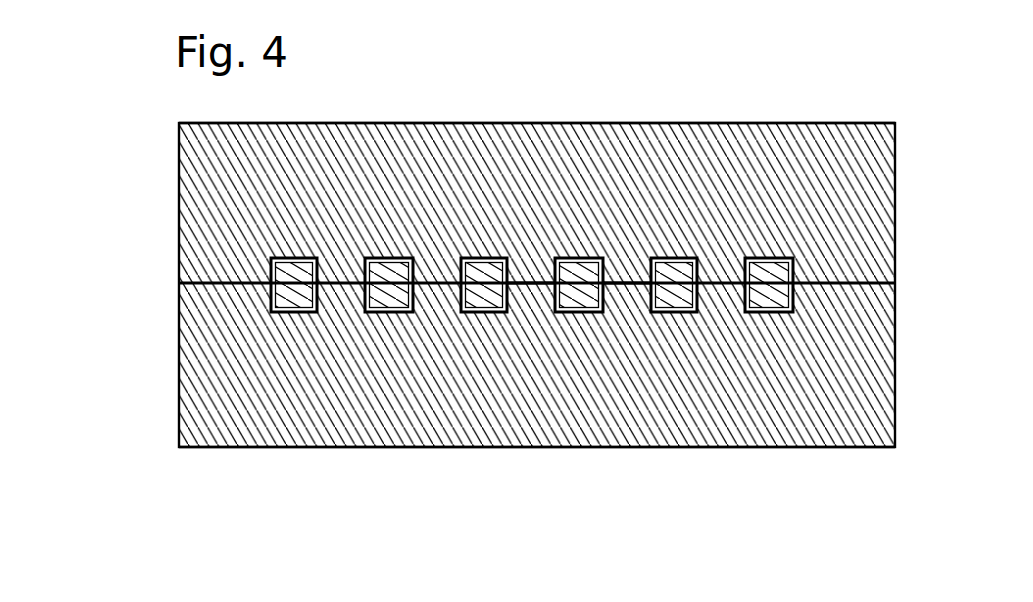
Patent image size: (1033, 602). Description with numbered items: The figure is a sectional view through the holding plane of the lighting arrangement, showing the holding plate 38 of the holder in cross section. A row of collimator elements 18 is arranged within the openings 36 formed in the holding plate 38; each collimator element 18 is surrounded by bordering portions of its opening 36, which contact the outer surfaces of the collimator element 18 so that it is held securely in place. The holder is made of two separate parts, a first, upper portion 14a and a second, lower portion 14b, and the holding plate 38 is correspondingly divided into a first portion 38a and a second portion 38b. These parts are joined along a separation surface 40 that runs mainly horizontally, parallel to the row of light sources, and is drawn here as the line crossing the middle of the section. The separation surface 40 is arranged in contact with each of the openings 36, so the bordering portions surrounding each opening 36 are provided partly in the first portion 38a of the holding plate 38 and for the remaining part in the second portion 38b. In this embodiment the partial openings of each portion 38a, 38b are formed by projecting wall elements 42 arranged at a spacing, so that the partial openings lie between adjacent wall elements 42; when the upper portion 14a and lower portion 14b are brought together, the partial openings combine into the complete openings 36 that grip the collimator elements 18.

The first, upper portion of the holder 14a is at (157, 122).
The second, lower portion of the holder 14b is at (164, 444).
The collimator element 18 is at (478, 293).
The opening 36 is at (485, 257).
The holding plate 38 is at (157, 247).
The first portion of the holding plate 38a is at (697, 142).
The second portion of the holding plate 38b is at (722, 417).
The separation surface 40 is at (850, 283).
The projecting wall element 42 is at (622, 278).